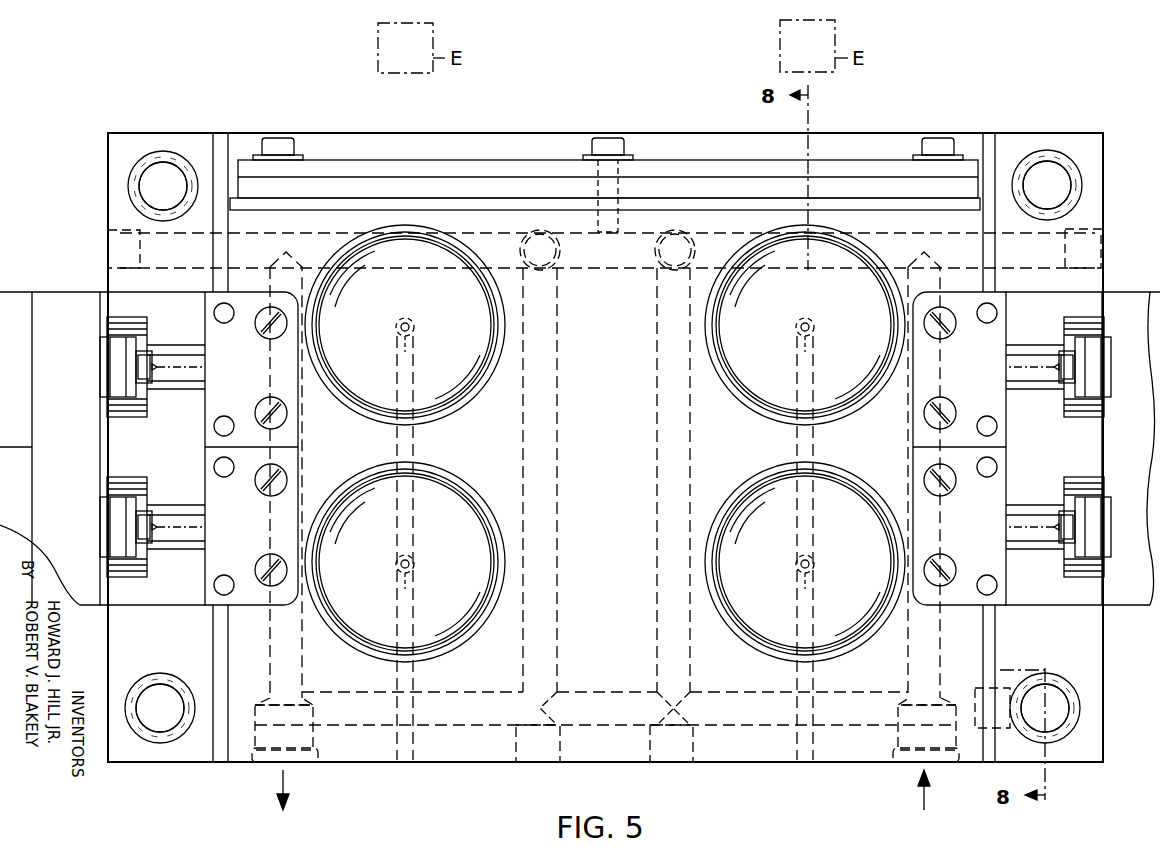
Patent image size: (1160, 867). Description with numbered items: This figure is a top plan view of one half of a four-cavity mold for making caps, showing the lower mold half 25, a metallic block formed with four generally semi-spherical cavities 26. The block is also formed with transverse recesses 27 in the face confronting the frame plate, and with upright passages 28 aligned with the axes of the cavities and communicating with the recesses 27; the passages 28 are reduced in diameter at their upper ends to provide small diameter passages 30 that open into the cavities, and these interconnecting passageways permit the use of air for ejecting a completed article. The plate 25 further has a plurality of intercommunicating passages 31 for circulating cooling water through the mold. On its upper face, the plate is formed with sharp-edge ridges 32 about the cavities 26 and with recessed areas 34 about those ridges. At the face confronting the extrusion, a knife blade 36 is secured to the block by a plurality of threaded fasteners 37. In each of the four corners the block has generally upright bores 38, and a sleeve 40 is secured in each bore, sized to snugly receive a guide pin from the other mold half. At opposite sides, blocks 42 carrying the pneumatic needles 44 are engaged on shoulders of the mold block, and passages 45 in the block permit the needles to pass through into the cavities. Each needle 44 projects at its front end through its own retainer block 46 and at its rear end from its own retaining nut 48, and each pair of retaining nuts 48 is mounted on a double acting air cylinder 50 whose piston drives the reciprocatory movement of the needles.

The lower mold half 25 is at (592, 762).
The semi-spherical cavities 26 is at (422, 361).
The transverse recesses 27 is at (414, 447).
The upright passages 28 is at (405, 321).
The small diameter passages 30 is at (409, 325).
The intercommunicating passages 31 is at (320, 236).
The sharp-edge ridges 32 is at (503, 327).
The recessed areas 34 is at (594, 474).
The knife blade 36 is at (500, 160).
The threaded fasteners 37 is at (278, 140).
The upright bores 38 is at (150, 162).
The sleeve 40 is at (177, 176).
The blocks 42 is at (162, 324).
The pneumatic needles 44 is at (182, 385).
The passages 45 is at (330, 367).
The retainer block 46 is at (225, 371).
The retaining nut 48 is at (100, 365).
The double acting air cylinder 50 is at (22, 472).